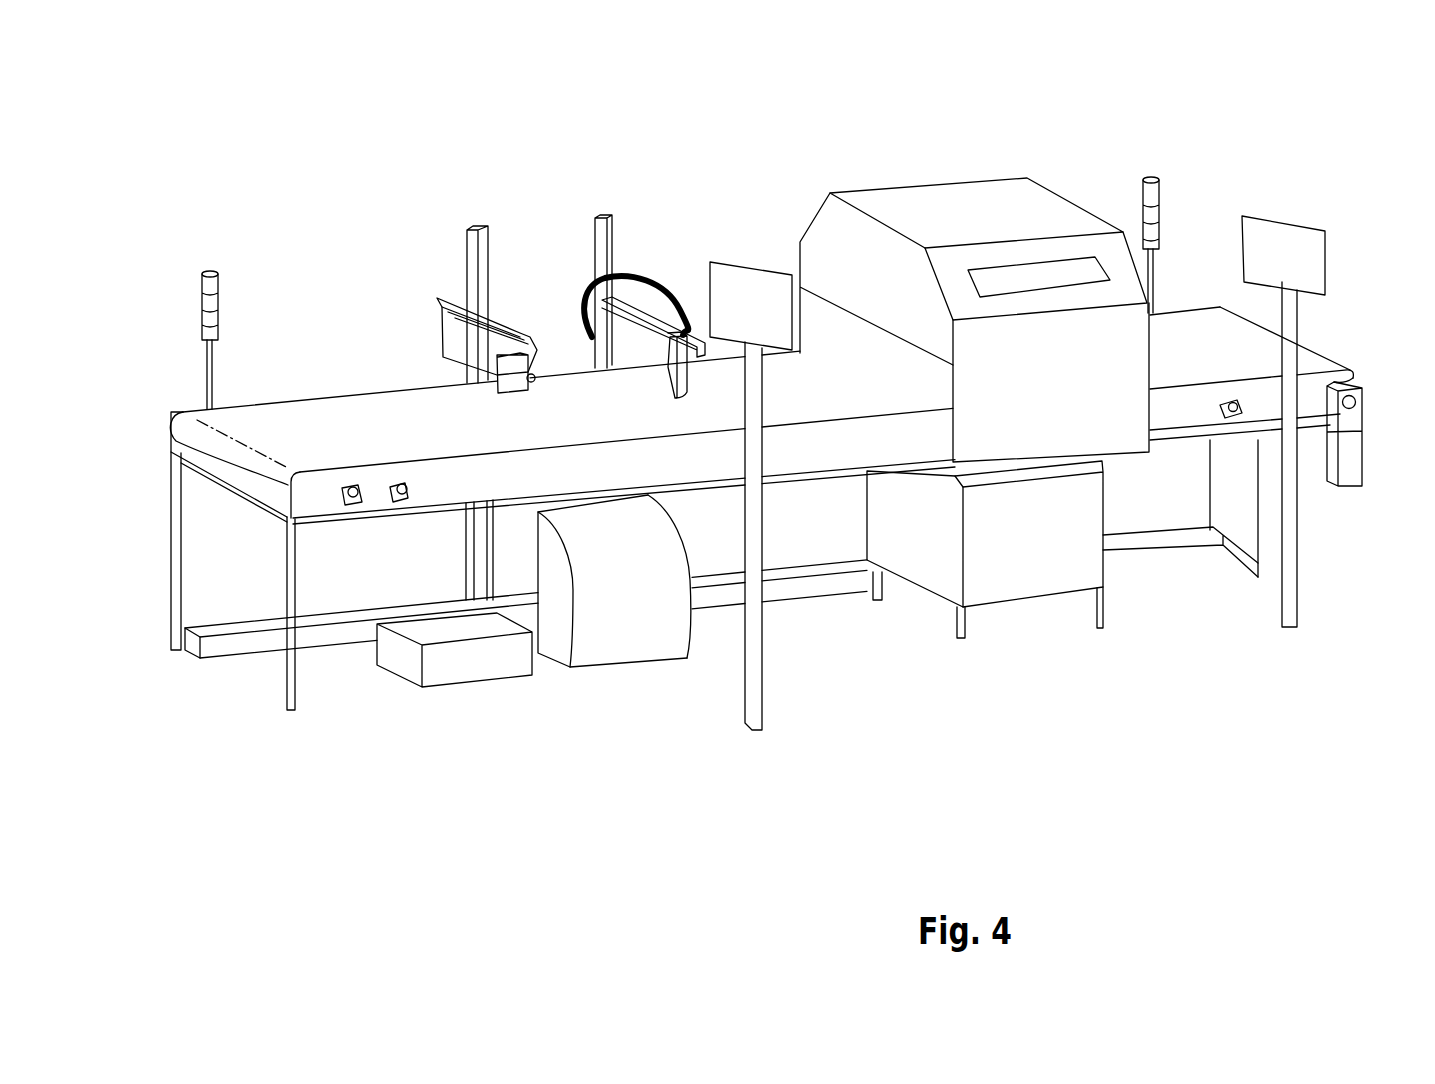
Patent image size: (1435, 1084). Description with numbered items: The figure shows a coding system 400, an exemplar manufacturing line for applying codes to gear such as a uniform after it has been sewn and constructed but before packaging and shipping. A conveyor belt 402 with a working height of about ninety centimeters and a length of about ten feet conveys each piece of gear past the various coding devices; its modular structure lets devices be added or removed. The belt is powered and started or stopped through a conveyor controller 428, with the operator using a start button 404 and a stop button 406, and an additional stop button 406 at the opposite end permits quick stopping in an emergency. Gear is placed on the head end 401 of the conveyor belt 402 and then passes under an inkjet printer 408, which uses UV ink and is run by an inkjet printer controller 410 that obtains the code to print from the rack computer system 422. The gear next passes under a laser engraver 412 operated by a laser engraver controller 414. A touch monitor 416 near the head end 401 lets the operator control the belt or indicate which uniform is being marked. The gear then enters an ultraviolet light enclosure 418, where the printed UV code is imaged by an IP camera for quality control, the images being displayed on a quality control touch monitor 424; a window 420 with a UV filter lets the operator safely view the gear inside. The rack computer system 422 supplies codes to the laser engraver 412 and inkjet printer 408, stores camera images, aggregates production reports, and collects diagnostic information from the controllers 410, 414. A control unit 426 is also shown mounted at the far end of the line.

The coding system 400 is at (1218, 70).
The head end 401 is at (183, 436).
The conveyor belt 402 is at (395, 427).
The start button 404 is at (352, 505).
The stop button 406 is at (398, 503).
The inkjet printer 408 is at (500, 303).
The inkjet printer controller 410 is at (450, 687).
The laser engraver 412 is at (673, 347).
The laser engraver controller 414 is at (637, 607).
The touch monitor 416 is at (742, 298).
The ultraviolet light enclosure 418 is at (935, 210).
The window 420 is at (1003, 283).
The rack computer system 422 is at (1017, 570).
The quality control touch monitor 424 is at (1260, 245).
The control panel 426 is at (1355, 415).
The conveyor controller 428 is at (207, 268).